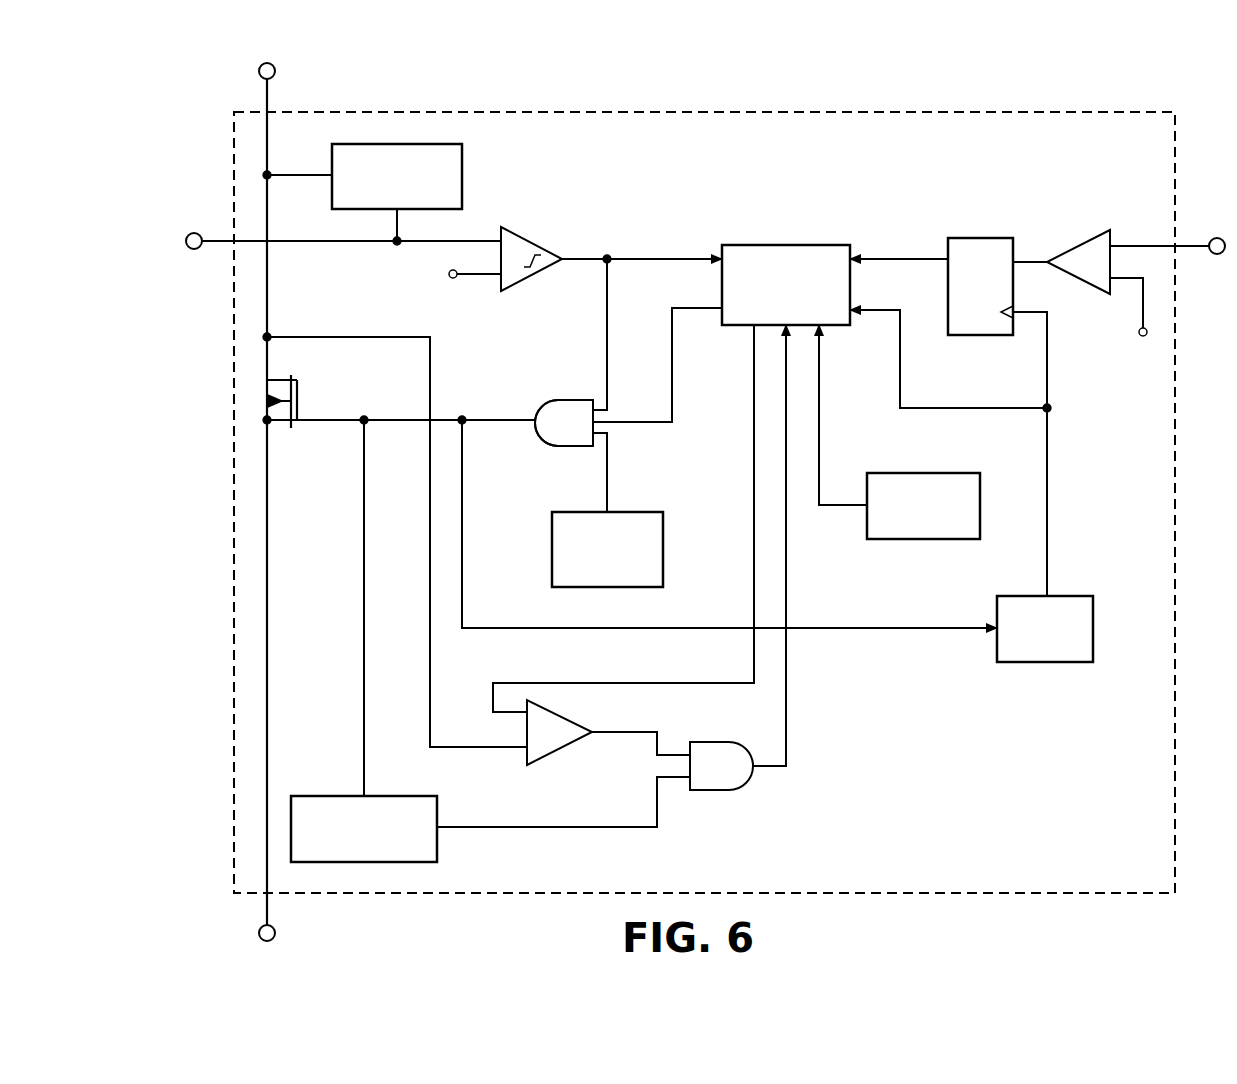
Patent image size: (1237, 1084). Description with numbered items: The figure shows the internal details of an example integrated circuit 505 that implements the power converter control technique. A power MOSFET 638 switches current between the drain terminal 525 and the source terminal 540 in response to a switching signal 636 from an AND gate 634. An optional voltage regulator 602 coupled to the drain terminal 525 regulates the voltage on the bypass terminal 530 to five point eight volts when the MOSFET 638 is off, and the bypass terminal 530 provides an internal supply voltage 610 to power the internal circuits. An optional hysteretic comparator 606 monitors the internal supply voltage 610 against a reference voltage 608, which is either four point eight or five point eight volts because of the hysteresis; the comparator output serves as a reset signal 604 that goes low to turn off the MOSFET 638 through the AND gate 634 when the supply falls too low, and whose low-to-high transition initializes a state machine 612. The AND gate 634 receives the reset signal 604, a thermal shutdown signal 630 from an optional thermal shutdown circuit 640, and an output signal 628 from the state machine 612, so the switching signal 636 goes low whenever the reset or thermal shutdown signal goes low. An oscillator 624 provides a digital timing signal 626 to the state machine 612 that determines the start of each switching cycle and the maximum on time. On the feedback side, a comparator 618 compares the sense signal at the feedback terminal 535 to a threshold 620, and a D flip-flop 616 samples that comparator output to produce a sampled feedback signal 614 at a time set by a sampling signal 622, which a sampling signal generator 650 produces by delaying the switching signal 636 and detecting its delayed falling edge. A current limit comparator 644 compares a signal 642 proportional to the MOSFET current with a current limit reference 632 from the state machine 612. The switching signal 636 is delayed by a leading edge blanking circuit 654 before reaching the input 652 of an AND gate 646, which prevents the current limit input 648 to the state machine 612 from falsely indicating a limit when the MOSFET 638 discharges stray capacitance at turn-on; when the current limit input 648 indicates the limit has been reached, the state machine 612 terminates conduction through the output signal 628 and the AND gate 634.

The integrated circuit 505 is at (722, 108).
The drain terminal 525 is at (283, 73).
The bypass terminal 530 is at (190, 258).
The feedback terminal 535 is at (1208, 256).
The source terminal 540 is at (284, 922).
The voltage regulator 602 is at (462, 170).
The reset signal 604 is at (607, 252).
The hysteretic comparator 606 is at (536, 290).
The reference voltage 608 is at (440, 272).
The internal supply voltage 610 is at (332, 249).
The state machine 612 is at (778, 238).
The sampled feedback signal UFB* 614 is at (892, 248).
The D flip-flop 616 is at (975, 228).
The comparator 618 is at (1069, 236).
The threshold VTH 620 is at (1128, 347).
The sampling signal 622 is at (1052, 486).
The oscillator 624 is at (934, 462).
The digital timing signal DTIMING 626 is at (830, 428).
The output signal 628 is at (682, 393).
The thermal shutdown signal 630 is at (613, 447).
The current limit reference 632 is at (745, 480).
The AND gate 634 is at (564, 423).
The switching signal 636 is at (500, 408).
The power MOSFET 638 is at (300, 378).
The thermal shutdown circuit 640 is at (566, 508).
The current sense signal 642 is at (445, 738).
The current limit comparator 644 is at (590, 708).
The AND gate 646 is at (721, 766).
The current limit input 648 is at (795, 690).
The sampling signal generator 650 is at (1047, 672).
The input of AND gate 646 652 is at (665, 818).
The leading edge blanking circuit 654 is at (329, 791).